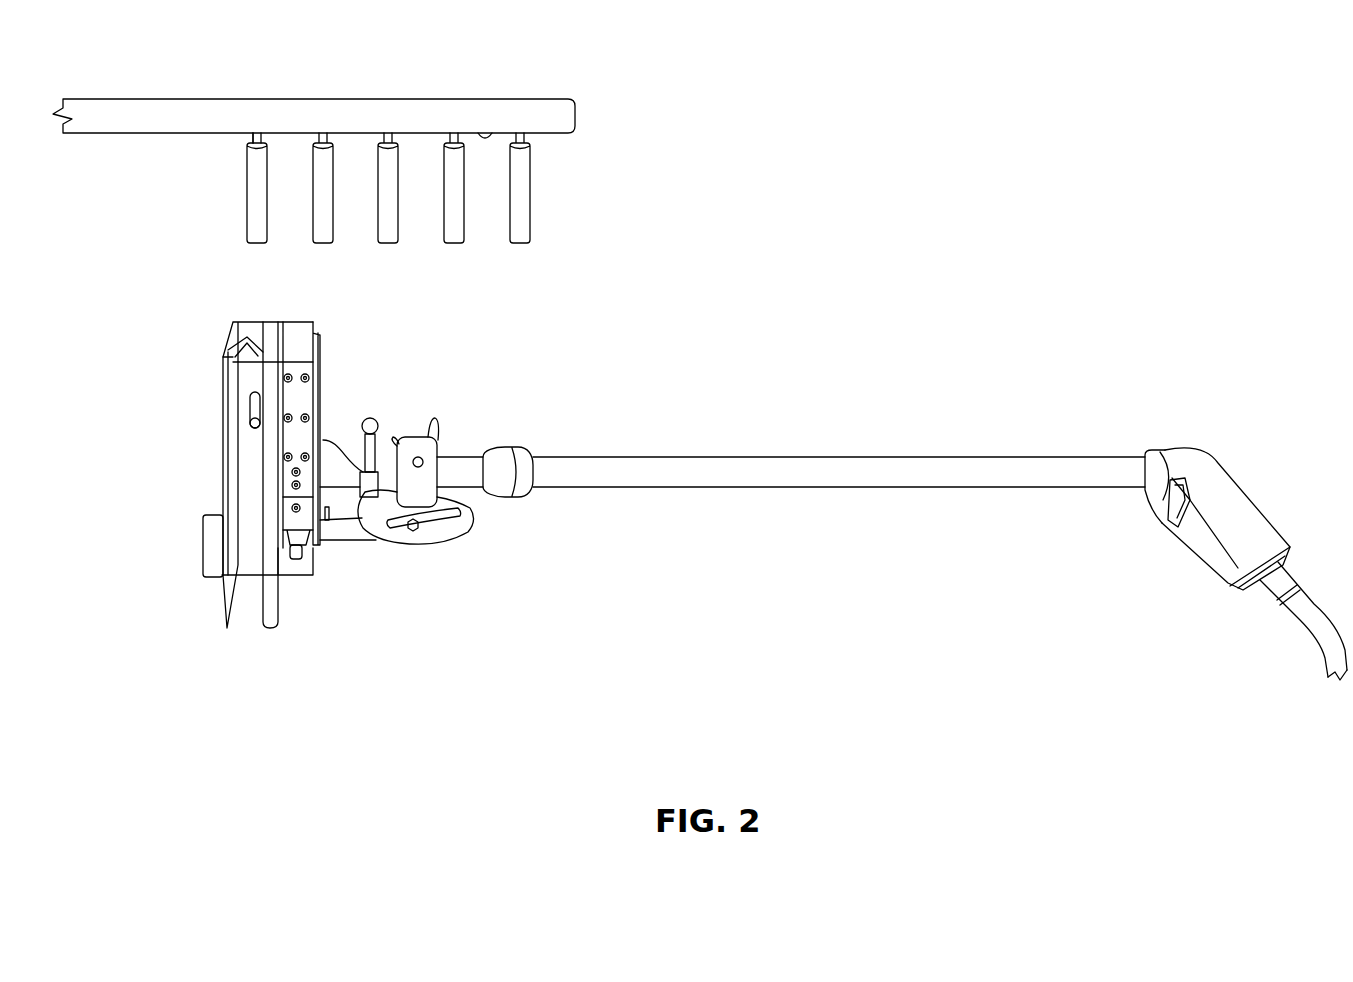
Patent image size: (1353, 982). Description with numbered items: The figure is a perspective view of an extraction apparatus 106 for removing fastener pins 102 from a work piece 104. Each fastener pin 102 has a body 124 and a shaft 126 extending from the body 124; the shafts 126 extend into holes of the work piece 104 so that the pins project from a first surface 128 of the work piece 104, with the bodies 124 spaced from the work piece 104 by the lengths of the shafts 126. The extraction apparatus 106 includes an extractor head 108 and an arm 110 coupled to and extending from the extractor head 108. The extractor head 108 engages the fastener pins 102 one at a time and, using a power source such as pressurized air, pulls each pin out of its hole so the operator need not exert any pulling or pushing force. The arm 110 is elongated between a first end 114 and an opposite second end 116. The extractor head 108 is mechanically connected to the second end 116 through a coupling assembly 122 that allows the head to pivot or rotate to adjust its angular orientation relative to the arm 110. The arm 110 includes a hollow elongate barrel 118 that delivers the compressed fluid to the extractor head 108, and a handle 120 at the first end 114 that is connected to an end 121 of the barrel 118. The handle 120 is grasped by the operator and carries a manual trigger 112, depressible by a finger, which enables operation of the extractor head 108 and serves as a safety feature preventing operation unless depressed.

The fastener pin 102 is at (260, 238).
The work piece 104 is at (367, 110).
The extraction apparatus 106 is at (863, 243).
The extractor head 108 is at (200, 408).
The arm 110 is at (848, 396).
The manual trigger 112 is at (1167, 522).
The first end 114 is at (1296, 545).
The second end 116 is at (530, 443).
The barrel 118 is at (772, 457).
The handle 120 is at (1233, 507).
The end of the barrel 121 is at (1138, 445).
The coupling assembly 122 is at (432, 405).
The body 124 is at (253, 182).
The shaft 126 is at (253, 140).
The first surface 128 is at (483, 137).